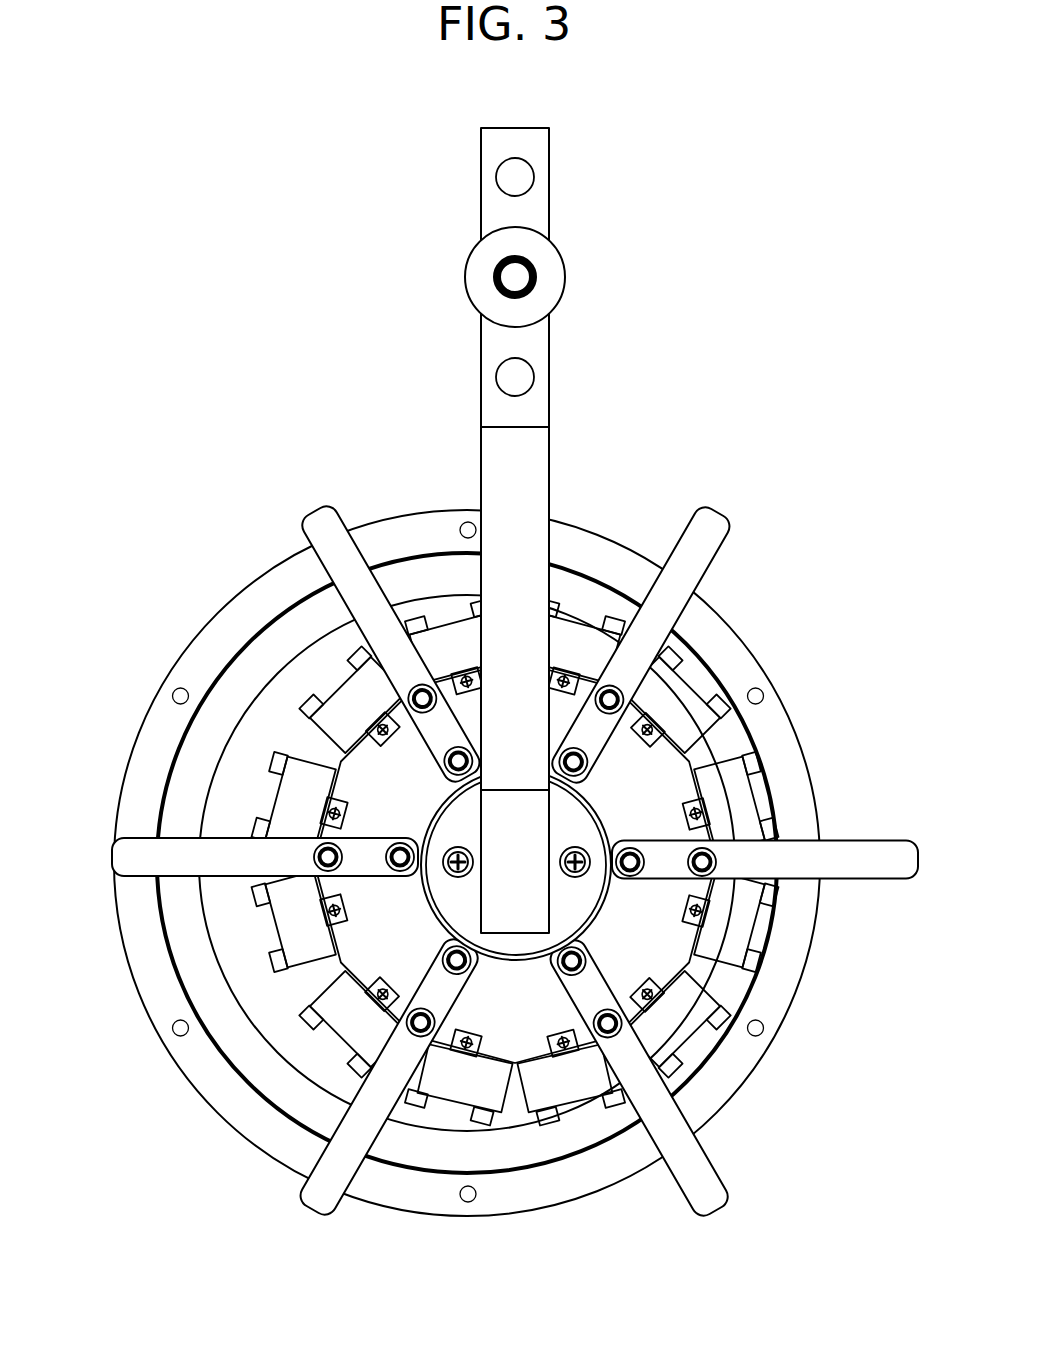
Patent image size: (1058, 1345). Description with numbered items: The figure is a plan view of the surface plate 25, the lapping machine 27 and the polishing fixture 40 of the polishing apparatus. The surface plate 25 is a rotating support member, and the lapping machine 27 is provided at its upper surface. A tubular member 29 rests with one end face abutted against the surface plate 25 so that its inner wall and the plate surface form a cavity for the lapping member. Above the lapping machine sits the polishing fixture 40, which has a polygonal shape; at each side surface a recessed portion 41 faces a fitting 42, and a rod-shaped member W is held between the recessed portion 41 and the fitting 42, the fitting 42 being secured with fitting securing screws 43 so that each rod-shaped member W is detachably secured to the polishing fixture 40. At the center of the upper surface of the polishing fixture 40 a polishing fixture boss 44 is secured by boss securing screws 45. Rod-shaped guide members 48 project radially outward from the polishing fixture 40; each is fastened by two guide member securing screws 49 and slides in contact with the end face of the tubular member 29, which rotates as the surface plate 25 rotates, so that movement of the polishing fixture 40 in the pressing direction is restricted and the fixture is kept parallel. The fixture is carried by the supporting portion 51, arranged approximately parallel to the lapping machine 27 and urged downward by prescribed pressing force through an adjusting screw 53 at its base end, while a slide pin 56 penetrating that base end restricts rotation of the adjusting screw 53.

The surface plate 25 is at (213, 982).
The lapping machine 27 is at (230, 910).
The tubular member 29 is at (735, 1062).
The polishing fixture 40 is at (515, 861).
The recessed portion 41 is at (565, 1057).
The fitting 42 is at (458, 1082).
The fitting securing screws 43 is at (497, 1090).
The polishing fixture boss 44 is at (573, 907).
The boss securing screws 45 is at (588, 867).
The rod-shaped guide members 48 is at (825, 860).
The guide member securing screws 49 is at (716, 840).
The supporting portion 51 is at (535, 530).
The adjusting screw 53 is at (550, 275).
The slide pin 56 is at (512, 175).
The rod-shaped member W is at (373, 1002).